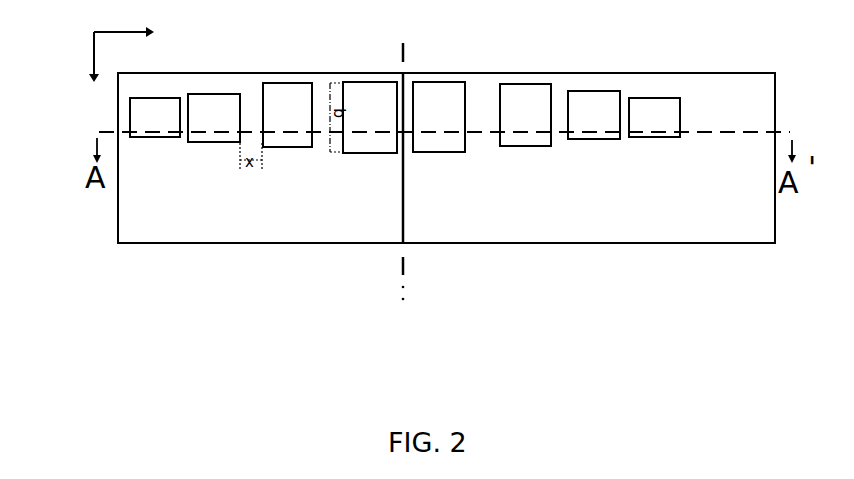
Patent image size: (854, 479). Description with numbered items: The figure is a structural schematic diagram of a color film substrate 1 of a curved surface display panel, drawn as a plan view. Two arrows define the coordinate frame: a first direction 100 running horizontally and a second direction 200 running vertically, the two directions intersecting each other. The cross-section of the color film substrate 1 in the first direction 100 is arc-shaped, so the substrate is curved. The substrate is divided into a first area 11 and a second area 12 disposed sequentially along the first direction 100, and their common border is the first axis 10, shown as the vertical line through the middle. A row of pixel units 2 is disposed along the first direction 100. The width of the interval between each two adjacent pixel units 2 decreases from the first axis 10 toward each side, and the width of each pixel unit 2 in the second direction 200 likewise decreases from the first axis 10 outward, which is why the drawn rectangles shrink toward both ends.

The color film substrate 1 is at (446, 223).
The pixel unit 2 is at (288, 115).
The first axis 10 is at (407, 155).
The first area 11 is at (215, 214).
The second area 12 is at (589, 195).
The first direction 100 is at (124, 18).
The second direction 200 is at (63, 57).